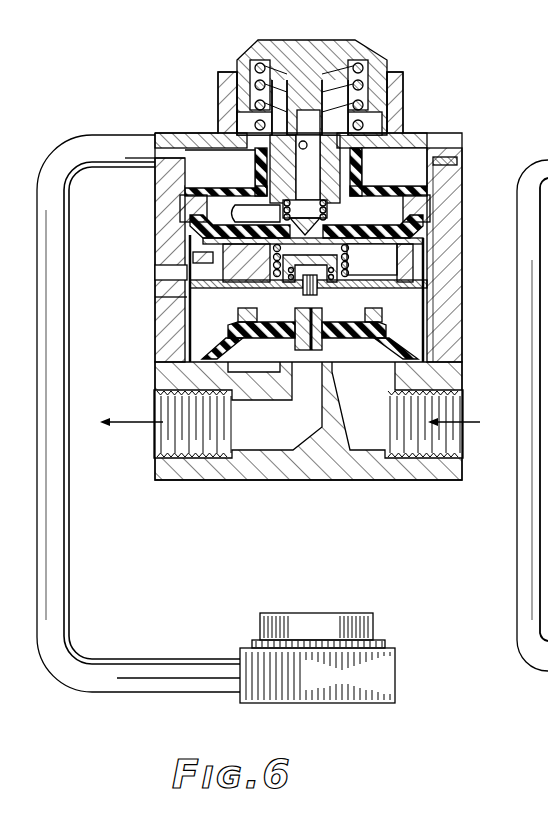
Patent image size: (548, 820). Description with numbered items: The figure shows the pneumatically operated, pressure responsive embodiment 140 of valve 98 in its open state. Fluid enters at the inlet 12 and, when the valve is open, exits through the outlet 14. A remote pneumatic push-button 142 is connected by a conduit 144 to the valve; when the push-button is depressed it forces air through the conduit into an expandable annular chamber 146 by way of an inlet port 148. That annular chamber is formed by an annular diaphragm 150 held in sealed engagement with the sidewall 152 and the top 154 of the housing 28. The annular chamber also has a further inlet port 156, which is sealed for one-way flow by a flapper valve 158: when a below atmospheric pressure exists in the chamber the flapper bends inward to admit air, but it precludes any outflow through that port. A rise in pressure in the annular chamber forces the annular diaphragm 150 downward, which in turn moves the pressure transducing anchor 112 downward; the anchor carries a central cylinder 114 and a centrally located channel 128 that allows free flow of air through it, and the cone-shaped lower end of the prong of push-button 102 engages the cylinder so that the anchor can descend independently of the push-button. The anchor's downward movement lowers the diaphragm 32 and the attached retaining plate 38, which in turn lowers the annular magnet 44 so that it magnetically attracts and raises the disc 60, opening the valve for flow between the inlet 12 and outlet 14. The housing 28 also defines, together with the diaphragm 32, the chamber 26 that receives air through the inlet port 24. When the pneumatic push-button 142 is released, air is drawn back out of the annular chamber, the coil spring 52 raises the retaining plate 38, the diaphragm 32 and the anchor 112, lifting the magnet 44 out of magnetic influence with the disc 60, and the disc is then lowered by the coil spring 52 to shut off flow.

The inlet 12 is at (449, 452).
The outlet 14 is at (168, 447).
The inlet port 24 is at (167, 270).
The chamber 26 is at (162, 297).
The housing 28 is at (301, 276).
The diaphragm 32 is at (400, 270).
The retaining plate 38 is at (346, 263).
The annular magnet 44 is at (384, 271).
The coil spring 52 is at (310, 326).
The disc 60 is at (203, 285).
The valve 98 is at (140, 185).
The push-button 102 is at (377, 49).
The pressure transducing anchor 112 is at (302, 220).
The central cylinder 114 is at (220, 169).
The channel 128 is at (290, 143).
The embodiment 140 is at (310, 116).
The pneumatic push-button 142 is at (398, 688).
The conduit 144 is at (70, 571).
The expandable annular chamber 146 is at (197, 137).
The inlet port 148 is at (162, 134).
The annular diaphragm 150 is at (188, 176).
The sidewall 152 is at (152, 212).
The top 154 is at (405, 132).
The further inlet port 156 is at (455, 158).
The flapper valve 158 is at (418, 152).